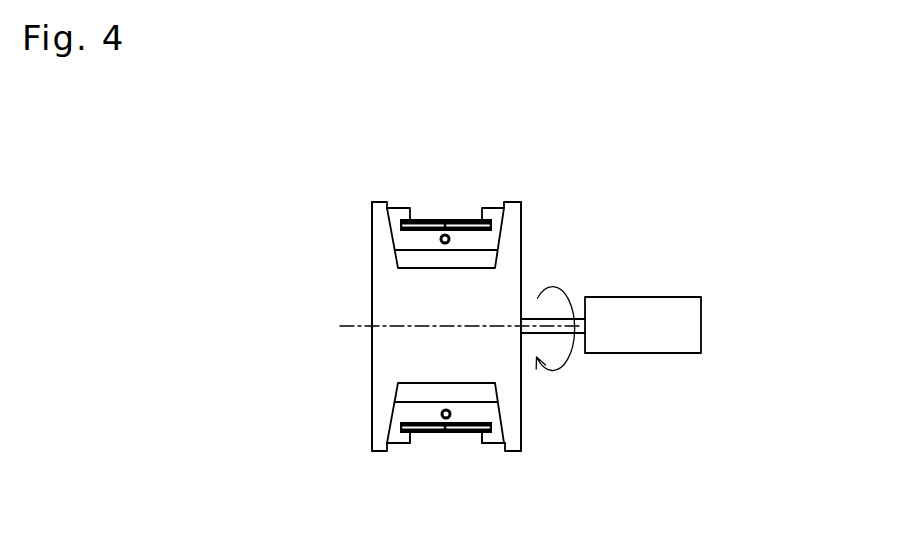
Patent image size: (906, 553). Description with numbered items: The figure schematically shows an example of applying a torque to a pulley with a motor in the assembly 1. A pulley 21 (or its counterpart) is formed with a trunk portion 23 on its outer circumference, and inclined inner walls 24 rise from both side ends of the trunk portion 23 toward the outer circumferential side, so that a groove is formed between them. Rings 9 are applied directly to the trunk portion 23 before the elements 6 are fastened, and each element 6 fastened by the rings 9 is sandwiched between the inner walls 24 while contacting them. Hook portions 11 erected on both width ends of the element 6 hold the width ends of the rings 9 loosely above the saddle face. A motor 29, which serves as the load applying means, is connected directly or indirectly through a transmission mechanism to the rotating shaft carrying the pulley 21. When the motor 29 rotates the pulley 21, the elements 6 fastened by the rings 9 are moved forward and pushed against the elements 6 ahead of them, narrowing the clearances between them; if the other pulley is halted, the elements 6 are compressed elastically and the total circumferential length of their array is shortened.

The rotating drum device 1 is at (484, 169).
The element 6 is at (415, 250).
The ring 9 is at (463, 218).
The hook portion 11 is at (402, 443).
The pulley 21 is at (372, 252).
The trunk portion 23 is at (462, 270).
The inclined inner wall 24 is at (388, 232).
The motor 29 is at (702, 322).